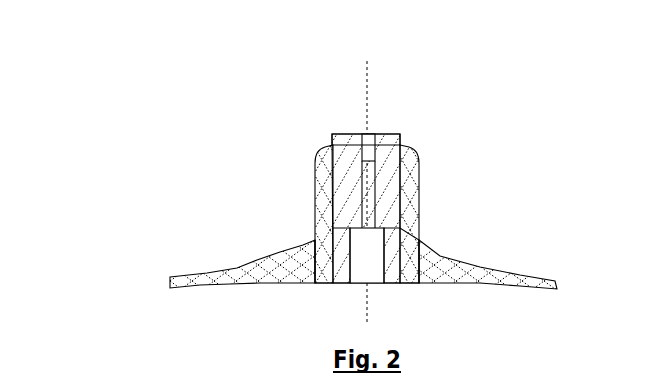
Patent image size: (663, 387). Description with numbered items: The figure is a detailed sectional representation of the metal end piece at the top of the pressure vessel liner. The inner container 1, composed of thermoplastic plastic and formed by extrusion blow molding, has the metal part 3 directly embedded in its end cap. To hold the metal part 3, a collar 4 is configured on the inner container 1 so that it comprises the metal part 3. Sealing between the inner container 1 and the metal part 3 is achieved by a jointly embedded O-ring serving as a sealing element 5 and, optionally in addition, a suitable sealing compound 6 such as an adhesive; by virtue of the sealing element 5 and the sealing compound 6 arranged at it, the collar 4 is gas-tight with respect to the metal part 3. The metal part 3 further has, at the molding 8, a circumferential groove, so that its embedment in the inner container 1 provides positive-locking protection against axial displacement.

The inner container 1 is at (244, 268).
The metal part 3 is at (396, 168).
The collar 4 is at (416, 211).
The sealing element 5 is at (318, 185).
The sealing compound 6 is at (410, 250).
The molding 8 is at (323, 227).